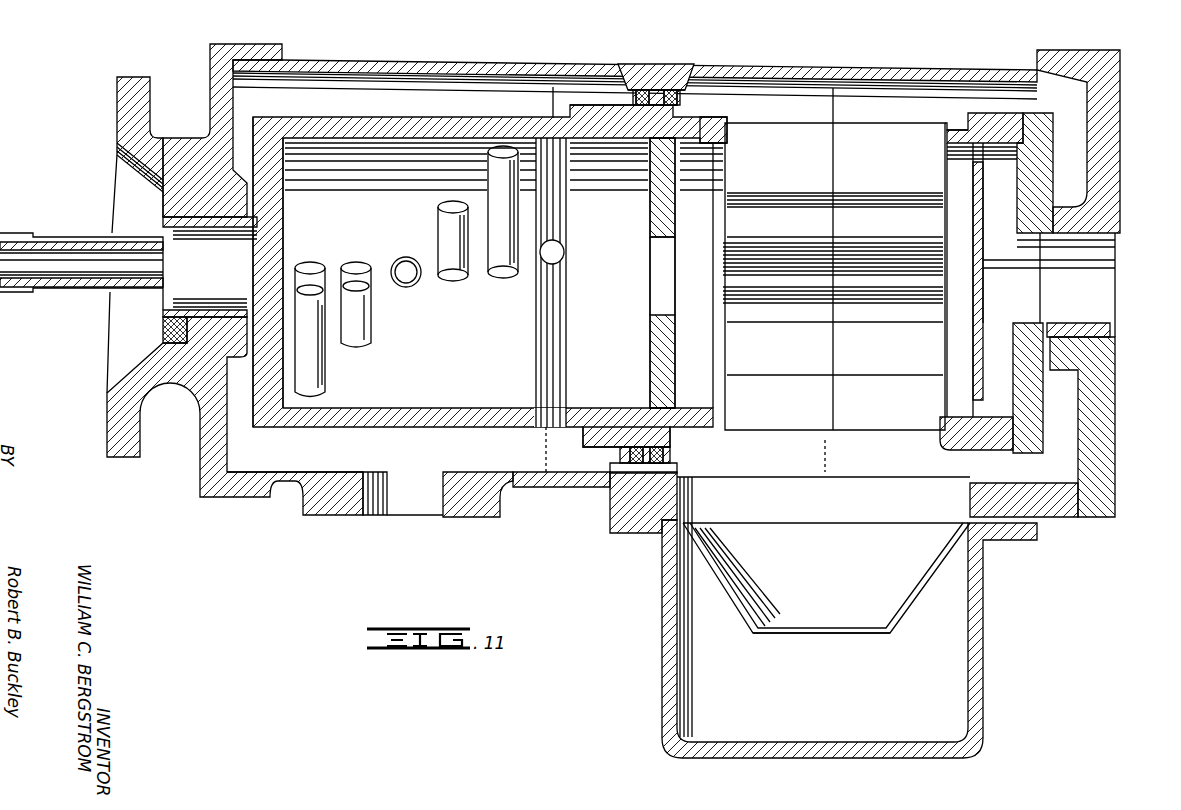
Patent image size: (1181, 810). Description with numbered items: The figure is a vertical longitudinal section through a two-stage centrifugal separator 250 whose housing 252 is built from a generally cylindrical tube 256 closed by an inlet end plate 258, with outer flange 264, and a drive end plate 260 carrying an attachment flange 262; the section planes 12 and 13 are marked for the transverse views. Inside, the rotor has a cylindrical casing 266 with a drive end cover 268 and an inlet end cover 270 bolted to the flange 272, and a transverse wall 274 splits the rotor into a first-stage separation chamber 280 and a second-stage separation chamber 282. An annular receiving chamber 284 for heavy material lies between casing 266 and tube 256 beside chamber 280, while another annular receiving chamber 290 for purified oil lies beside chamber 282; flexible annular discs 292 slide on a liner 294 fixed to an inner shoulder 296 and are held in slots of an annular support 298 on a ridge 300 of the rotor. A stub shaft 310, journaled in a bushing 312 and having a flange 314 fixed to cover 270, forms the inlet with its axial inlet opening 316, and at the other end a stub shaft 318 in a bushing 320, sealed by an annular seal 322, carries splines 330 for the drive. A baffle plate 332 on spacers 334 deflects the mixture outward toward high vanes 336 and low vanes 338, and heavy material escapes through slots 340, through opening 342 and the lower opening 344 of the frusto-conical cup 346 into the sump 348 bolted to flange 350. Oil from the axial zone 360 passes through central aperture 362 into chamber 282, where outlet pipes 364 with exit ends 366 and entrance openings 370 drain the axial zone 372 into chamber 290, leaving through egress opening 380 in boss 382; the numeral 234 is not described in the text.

The section line 12- 12 is at (815, 102).
The section line 13- 13 is at (546, 96).
The valve housing assembly 234 is at (302, 115).
The two-stage centrifugal separator 250 is at (556, 550).
The housing 252 is at (1042, 50).
The tube 256 is at (463, 60).
The inlet end plate 258 is at (1118, 101).
The drive end plate 260 is at (210, 73).
The attachment flange 262 is at (125, 95).
The outer flange 264 is at (1117, 55).
The cylindrical casing 266 is at (413, 129).
The drive end cover 268 is at (266, 256).
The inlet end cover 270 is at (1045, 166).
The flange 272 is at (996, 122).
The transverse wall 274 is at (675, 224).
The first-stage separation chamber 280 is at (680, 353).
The second-stage separation chamber 282 is at (620, 368).
The annular receiving chamber 284 is at (945, 125).
The annular receiving chamber 290 is at (357, 111).
The flexible annular discs 292 is at (643, 89).
The liner 294 is at (655, 66).
The inner shoulder 296 is at (624, 70).
The annular support 298 is at (681, 100).
The ridge 300 is at (710, 124).
The stub shaft 310 is at (1110, 233).
The bushing 312 is at (1110, 336).
The flange 314 is at (1027, 345).
The axial inlet opening 316 is at (997, 283).
The stub shaft 318 is at (167, 228).
The bushing 320 is at (230, 205).
The annular seal 322 is at (170, 220).
The splines 330 is at (60, 240).
The baffle plate 332 is at (979, 265).
The spacers 334 is at (997, 190).
The high vanes 336 is at (792, 228).
The low vanes 338 is at (776, 170).
The slots 340 is at (833, 273).
The opening 342 is at (955, 497).
The lower opening 344 is at (807, 635).
The frusto-conical cup 346 is at (915, 600).
The sump 348 is at (978, 641).
The flange 350 is at (610, 518).
The axial zone 360 is at (714, 303).
The central aperture 362 is at (662, 279).
The outlet pipes 364 is at (409, 288).
The exit ends 366 is at (552, 121).
The entrance openings 370 is at (318, 290).
The axial zone 372 is at (428, 282).
The egress opening 380 is at (411, 505).
The boss 382 is at (481, 505).